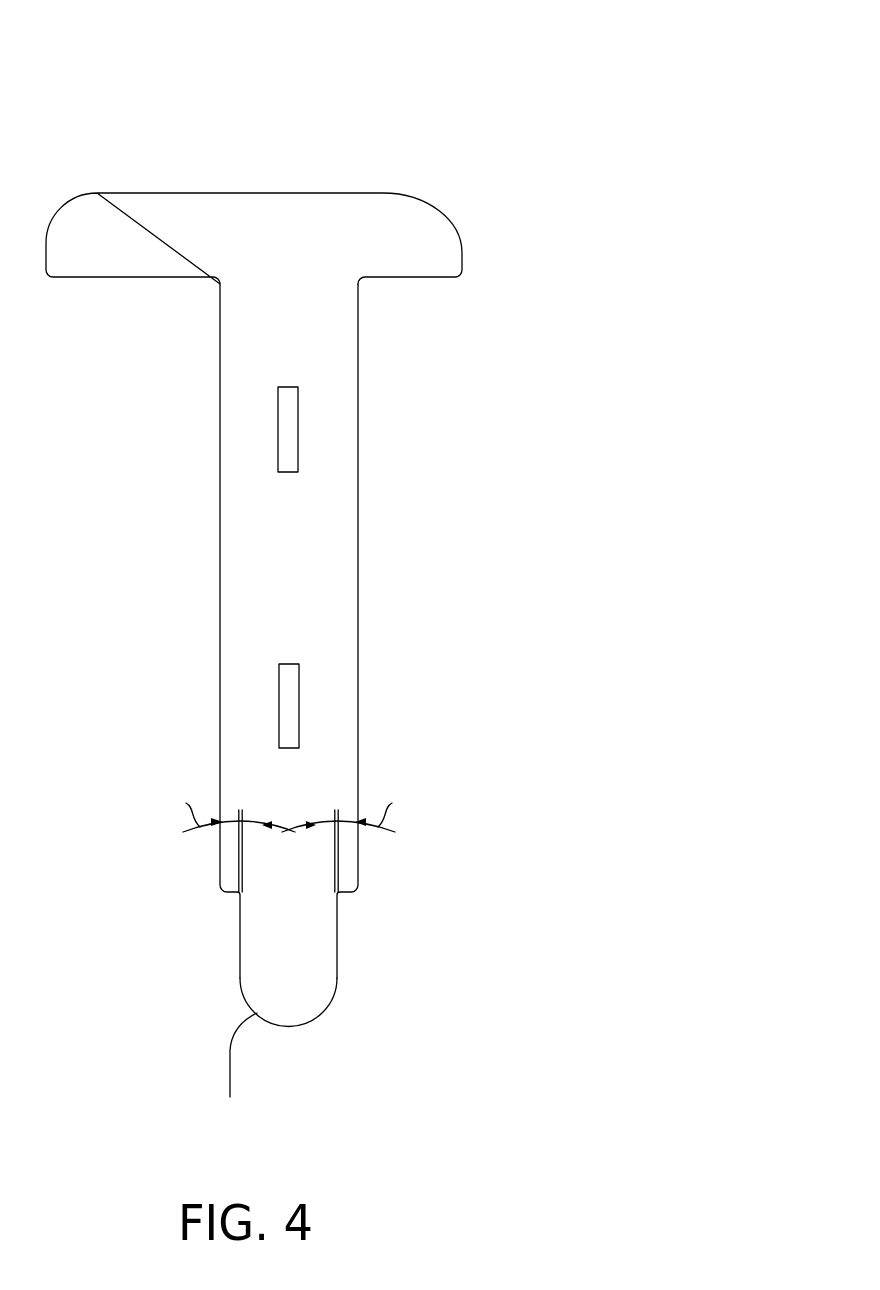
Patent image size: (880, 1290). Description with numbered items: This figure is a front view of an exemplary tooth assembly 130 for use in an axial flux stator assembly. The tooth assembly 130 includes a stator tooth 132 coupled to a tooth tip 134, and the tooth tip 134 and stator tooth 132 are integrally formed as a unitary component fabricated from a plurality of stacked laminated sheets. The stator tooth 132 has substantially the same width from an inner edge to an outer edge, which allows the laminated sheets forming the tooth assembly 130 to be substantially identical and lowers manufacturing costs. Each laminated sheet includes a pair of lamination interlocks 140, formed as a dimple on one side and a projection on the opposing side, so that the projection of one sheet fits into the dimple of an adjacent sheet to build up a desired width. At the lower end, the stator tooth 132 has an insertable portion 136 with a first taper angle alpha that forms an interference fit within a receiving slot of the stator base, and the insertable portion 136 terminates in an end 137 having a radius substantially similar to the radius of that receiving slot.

The tooth assembly 130 is at (308, 569).
The tooth tip 134 is at (178, 235).
The stator tooth 132 is at (335, 547).
The lamination interlock 140 is at (288, 423).
The insertable portion 136 is at (318, 950).
The end 137 is at (288, 1023).